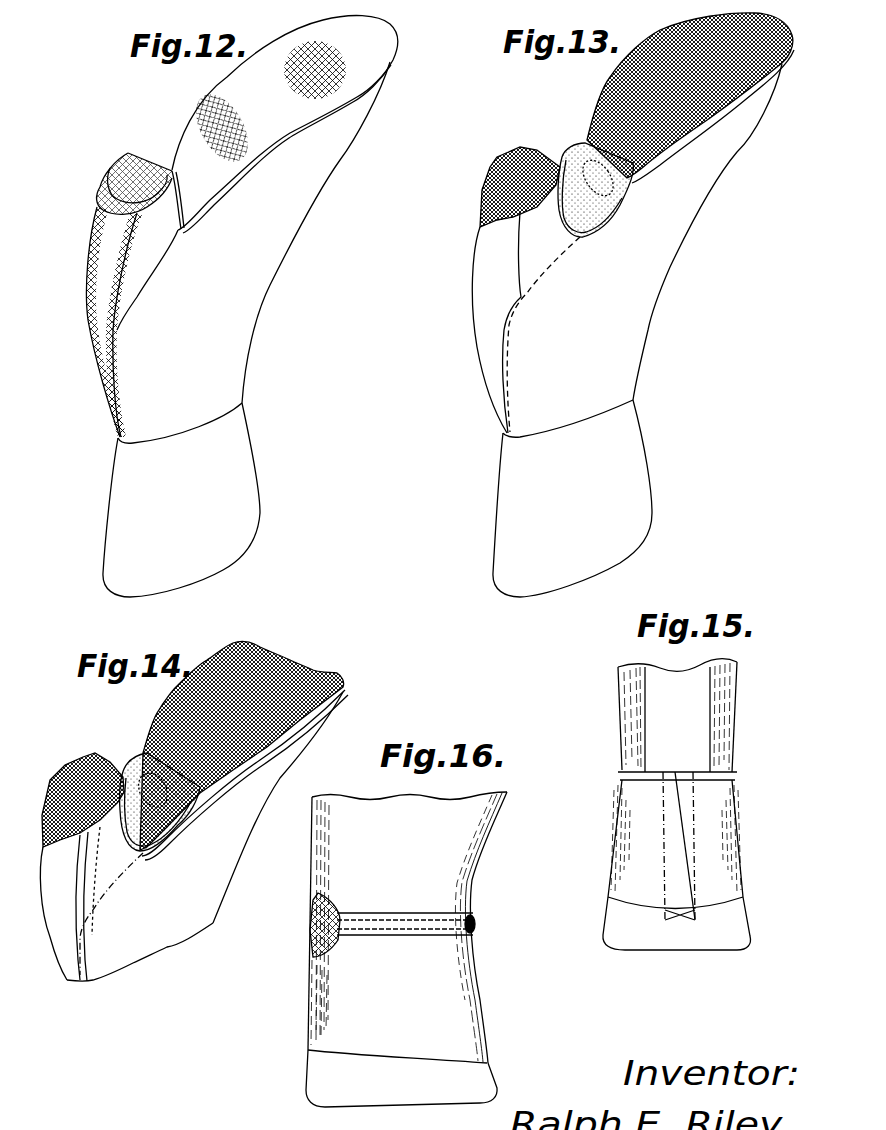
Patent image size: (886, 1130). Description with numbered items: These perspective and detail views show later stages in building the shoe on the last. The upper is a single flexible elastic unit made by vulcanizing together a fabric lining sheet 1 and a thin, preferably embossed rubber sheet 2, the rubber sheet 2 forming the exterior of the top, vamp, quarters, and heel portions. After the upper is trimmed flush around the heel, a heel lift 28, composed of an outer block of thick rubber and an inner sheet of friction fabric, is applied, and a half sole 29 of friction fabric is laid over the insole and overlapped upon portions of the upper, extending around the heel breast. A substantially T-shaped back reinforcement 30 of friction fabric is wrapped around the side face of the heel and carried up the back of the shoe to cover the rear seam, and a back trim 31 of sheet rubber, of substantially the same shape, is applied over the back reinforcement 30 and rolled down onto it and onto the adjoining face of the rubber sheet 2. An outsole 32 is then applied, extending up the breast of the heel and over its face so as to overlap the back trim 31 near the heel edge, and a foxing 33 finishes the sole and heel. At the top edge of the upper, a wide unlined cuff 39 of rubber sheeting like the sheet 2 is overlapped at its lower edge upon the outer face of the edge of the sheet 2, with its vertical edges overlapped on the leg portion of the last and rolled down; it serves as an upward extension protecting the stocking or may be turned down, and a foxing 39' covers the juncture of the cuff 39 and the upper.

In FIG. 16, the lining sheet 1 is at (333, 910).
In FIG. 12, the rubber sheet 2 is at (247, 283).
In FIG. 13, the rubber sheet 2 is at (637, 280).
In FIG. 14, the rubber sheet 2 is at (182, 907).
In FIG. 15, the rubber sheet 2 is at (737, 715).
In FIG. 16, the rubber sheet 2 is at (453, 837).
In FIG. 12, the heel lift 28 is at (127, 180).
In FIG. 12, the half sole 29 is at (370, 48).
In FIG. 12, the back reinforcement 30 is at (93, 257).
In FIG. 13, the back reinforcement 30 is at (552, 272).
In FIG. 13, the back trim 31 is at (497, 292).
In FIG. 14, the back trim 31 is at (67, 893).
In FIG. 13, the outsole 32 is at (740, 87).
In FIG. 14, the outsole 32 is at (287, 660).
In FIG. 14, the foxing 33 is at (223, 773).
In FIG. 15, the cuff 39 is at (699, 846).
In FIG. 16, the cuff 39 is at (298, 1014).
In FIG. 16, the foxing 39' is at (397, 931).